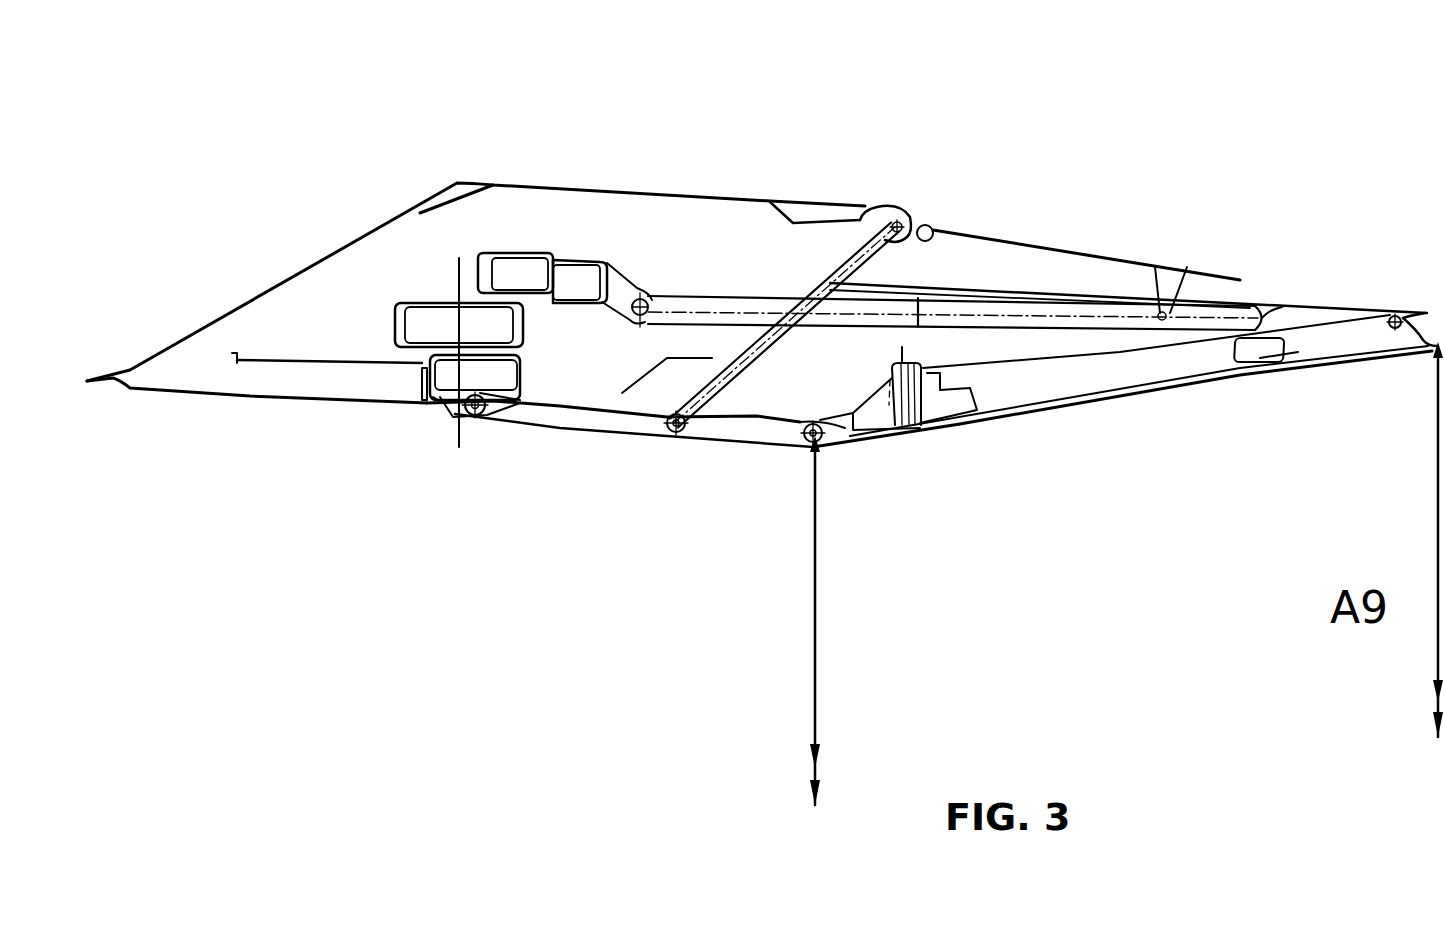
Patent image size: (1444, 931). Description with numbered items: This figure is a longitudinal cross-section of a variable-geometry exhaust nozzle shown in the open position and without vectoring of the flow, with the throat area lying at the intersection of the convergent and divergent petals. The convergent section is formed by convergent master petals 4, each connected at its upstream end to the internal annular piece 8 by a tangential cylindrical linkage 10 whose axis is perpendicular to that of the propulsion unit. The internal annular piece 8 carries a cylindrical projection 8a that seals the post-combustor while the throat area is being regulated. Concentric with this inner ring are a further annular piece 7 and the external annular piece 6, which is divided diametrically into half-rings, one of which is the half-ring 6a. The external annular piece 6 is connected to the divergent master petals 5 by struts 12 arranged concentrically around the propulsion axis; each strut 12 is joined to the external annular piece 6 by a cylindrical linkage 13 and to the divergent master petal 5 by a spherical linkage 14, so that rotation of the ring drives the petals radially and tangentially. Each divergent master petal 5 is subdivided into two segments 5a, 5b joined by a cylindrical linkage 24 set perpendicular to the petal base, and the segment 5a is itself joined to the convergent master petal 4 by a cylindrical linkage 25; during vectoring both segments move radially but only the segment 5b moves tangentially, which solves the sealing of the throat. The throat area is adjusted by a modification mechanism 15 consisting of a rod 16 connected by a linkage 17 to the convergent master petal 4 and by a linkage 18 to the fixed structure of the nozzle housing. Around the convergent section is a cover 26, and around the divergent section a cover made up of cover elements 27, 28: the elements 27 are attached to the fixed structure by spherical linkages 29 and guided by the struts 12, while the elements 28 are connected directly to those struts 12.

The convergent master petal 4 is at (563, 420).
The divergent master petal 5 is at (1190, 392).
The divergent petal segment 5a is at (873, 410).
The divergent petal segment 5b is at (1050, 385).
The external annular piece 6 is at (513, 248).
The half-ring 6a is at (545, 250).
The annular piece 7 is at (405, 298).
The internal annular piece 8 is at (495, 420).
The cylindrical projection 8a is at (250, 372).
The tangential cylindrical linkage 10 is at (453, 417).
The strut 12 is at (742, 297).
The cylindrical linkage 13 is at (633, 293).
The spherical linkage 14 is at (1395, 315).
The modification mechanism of the throat area 15 is at (806, 636).
The rod 16 is at (660, 360).
The linkage 17 is at (677, 430).
The linkage 18 is at (900, 222).
The cylindrical linkage 24 is at (922, 432).
The cylindrical linkage 25 is at (760, 437).
The cover 26 is at (865, 204).
The cover element 27 is at (1133, 258).
The cover element 28 is at (1286, 303).
The spherical linkage 29 is at (932, 227).